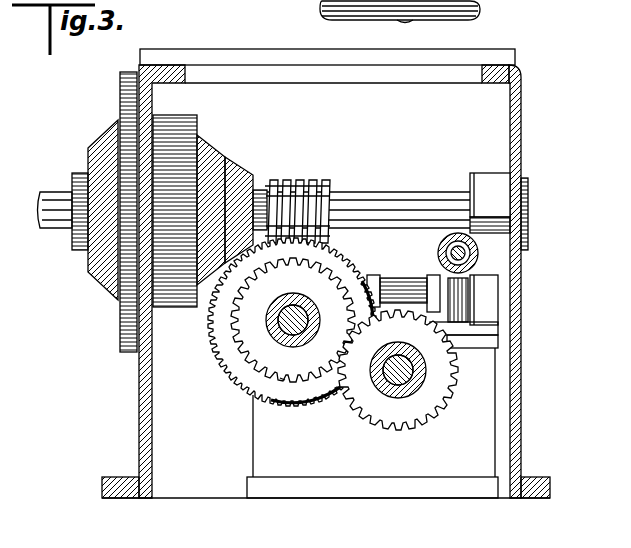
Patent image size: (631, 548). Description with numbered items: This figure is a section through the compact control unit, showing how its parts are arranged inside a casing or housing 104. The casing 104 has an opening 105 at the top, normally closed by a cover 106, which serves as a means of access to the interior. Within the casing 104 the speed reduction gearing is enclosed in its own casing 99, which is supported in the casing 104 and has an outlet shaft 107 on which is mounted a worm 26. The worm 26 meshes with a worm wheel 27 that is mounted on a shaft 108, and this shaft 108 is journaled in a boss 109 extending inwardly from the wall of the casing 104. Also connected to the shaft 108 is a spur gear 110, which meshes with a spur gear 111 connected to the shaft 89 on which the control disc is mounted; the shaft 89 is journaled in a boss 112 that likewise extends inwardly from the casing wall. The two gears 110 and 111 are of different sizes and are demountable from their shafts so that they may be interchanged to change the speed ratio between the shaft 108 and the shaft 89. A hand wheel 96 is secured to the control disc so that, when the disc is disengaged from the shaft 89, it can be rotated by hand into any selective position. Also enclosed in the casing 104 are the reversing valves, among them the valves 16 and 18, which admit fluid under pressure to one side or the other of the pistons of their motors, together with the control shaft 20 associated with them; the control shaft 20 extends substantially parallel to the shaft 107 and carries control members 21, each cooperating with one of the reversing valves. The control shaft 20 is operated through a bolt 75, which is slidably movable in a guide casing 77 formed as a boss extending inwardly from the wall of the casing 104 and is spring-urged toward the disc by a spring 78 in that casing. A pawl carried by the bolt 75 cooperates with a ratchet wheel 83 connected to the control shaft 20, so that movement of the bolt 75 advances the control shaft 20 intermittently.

The reversing valve 16 is at (306, 497).
The reversing valve 18 is at (478, 497).
The control shaft 20 is at (405, 290).
The control member 21 is at (430, 275).
The worm 26 is at (291, 178).
The worm wheel 27 is at (222, 352).
The bolt 75 is at (527, 242).
The guide casing 77 is at (503, 224).
The spring 78 is at (478, 258).
The ratchet wheel 83 is at (462, 295).
The shaft 89 is at (408, 370).
The hand wheel 96 is at (480, 10).
The casing 99 is at (103, 146).
The casing 104 is at (522, 141).
The opening 105 is at (452, 70).
The cover 106 is at (197, 49).
The outlet shaft 107 is at (385, 191).
The shaft 108 is at (278, 320).
The boss 109 is at (272, 341).
The spur gear 110 is at (280, 378).
The spur gear 111 is at (388, 420).
The boss 112 is at (408, 388).